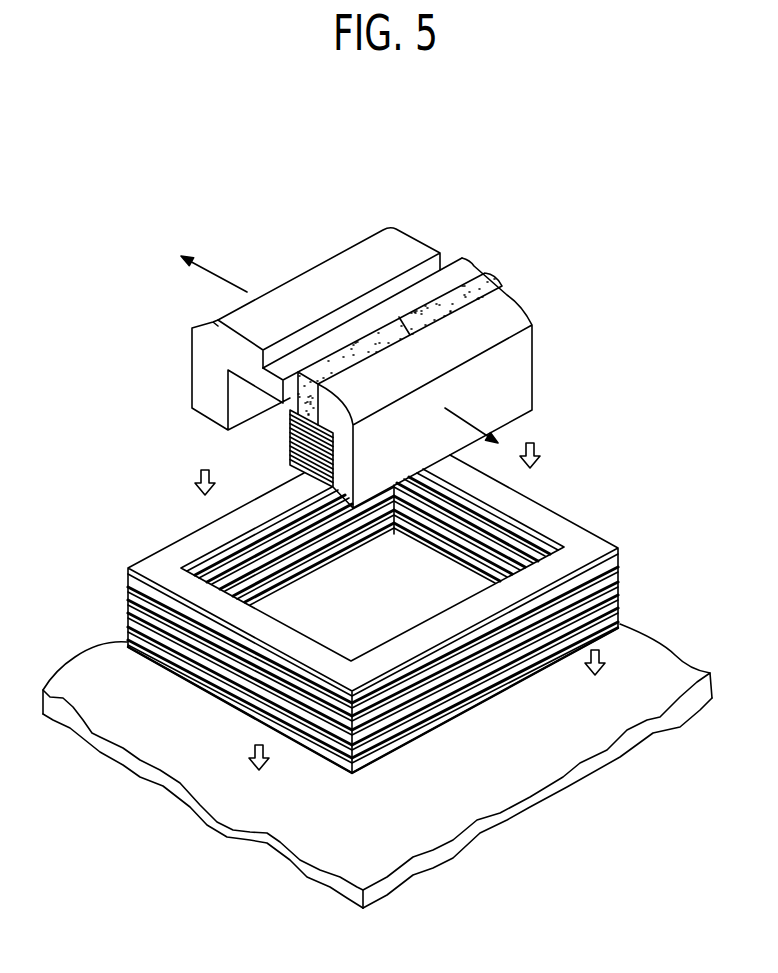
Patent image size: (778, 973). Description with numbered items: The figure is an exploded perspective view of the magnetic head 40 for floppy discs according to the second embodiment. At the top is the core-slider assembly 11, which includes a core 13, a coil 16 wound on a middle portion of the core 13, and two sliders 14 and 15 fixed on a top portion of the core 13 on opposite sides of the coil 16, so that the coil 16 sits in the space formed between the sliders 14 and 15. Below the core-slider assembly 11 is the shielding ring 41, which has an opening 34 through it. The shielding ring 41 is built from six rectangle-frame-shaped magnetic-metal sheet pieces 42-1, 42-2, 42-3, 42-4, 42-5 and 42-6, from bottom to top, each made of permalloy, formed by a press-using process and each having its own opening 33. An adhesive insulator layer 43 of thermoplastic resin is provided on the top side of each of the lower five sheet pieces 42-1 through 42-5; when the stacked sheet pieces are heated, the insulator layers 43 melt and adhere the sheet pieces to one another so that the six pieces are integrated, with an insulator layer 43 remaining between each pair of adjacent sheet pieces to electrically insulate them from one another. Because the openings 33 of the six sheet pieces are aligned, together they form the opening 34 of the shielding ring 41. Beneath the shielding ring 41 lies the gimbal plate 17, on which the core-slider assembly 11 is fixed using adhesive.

The magnetic head 40 is at (584, 198).
The core-slider assembly 11 is at (522, 295).
The core 13 is at (490, 279).
The slider 14 is at (377, 228).
The slider 15 is at (512, 318).
The coil 16 is at (290, 440).
The gimbal plate 17 is at (422, 843).
The opening 33 is at (215, 557).
The opening 34 is at (430, 565).
The shielding ring 41 is at (593, 502).
The sheet piece 42-1 is at (620, 621).
The sheet piece 42-2 is at (620, 607).
The sheet piece 42-3 is at (620, 595).
The sheet piece 42-4 is at (620, 583).
The sheet piece 42-5 is at (620, 575).
The sheet piece 42-6 is at (620, 566).
The adhesive insulator layer 43 is at (127, 640).